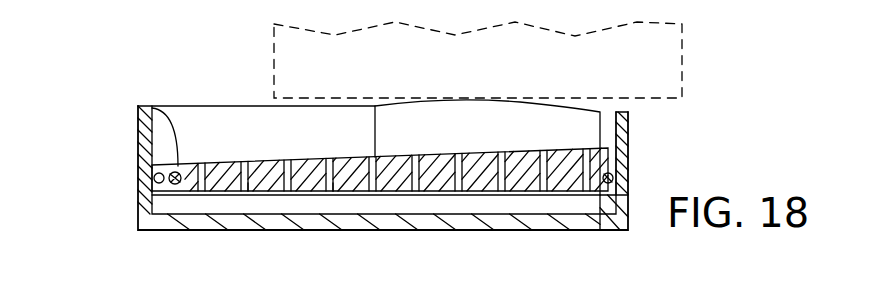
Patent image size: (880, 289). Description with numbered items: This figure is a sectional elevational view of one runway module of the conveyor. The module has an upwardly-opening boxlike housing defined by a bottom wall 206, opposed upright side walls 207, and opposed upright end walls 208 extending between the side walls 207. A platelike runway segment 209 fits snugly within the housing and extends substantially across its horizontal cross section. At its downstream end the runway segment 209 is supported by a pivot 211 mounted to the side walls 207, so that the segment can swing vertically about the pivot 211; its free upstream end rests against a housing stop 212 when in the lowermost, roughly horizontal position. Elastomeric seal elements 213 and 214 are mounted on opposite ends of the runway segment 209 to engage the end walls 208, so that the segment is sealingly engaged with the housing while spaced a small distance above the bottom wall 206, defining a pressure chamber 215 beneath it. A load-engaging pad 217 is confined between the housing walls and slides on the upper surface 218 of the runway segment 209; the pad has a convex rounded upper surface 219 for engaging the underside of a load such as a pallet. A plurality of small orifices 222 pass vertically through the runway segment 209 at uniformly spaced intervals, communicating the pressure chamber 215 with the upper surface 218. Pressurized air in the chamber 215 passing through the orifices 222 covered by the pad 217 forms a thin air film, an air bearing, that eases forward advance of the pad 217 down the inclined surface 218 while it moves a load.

The bottom wall 206 is at (138, 205).
The side wall 207 is at (182, 112).
The end wall 208 is at (143, 140).
The runway segment 209 is at (222, 164).
The pivot 211 is at (138, 112).
The housing stop 212 is at (618, 188).
The elastomeric seal element 213 is at (155, 178).
The elastomeric seal element 214 is at (612, 175).
The pressure chamber 215 is at (148, 198).
The load-engaging pad 217 is at (530, 125).
The upper surface 218 is at (268, 162).
The upper surface 219 is at (414, 102).
The orifice 222 is at (328, 160).